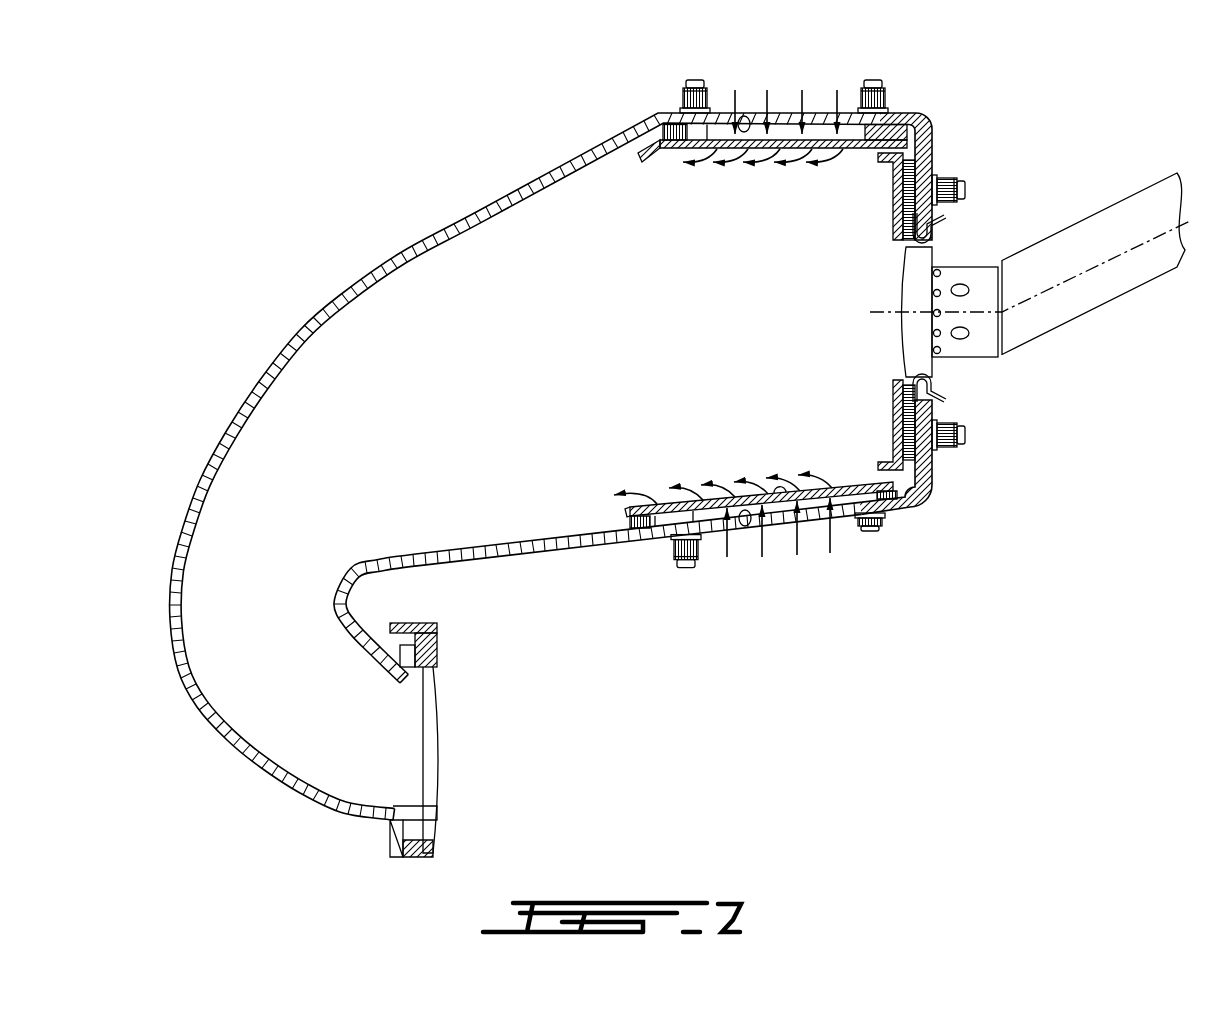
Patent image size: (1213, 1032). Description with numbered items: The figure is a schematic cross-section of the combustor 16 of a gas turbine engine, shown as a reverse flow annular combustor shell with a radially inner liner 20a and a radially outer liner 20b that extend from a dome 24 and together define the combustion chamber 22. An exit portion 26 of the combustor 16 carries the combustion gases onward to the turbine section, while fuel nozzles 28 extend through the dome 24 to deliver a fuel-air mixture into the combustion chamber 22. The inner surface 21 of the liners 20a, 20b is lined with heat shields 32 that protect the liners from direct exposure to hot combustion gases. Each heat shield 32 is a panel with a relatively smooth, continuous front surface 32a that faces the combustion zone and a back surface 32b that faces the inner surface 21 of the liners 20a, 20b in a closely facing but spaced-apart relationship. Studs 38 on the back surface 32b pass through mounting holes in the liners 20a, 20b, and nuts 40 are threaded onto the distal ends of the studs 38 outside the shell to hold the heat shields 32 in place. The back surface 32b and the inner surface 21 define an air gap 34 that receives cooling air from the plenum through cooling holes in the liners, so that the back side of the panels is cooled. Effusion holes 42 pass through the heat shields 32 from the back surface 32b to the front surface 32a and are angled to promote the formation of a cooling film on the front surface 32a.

The combustor 16 is at (253, 230).
The radially inner liner 20a is at (545, 551).
The radially outer liner 20b is at (485, 202).
The inner surface 21 is at (748, 116).
The combustion chamber 22 is at (707, 327).
The dome 24 is at (936, 475).
The exit portion 26 is at (383, 744).
The fuel nozzles 28 is at (1060, 210).
The heat shields 32 is at (793, 149).
The front surface 32a is at (718, 149).
The back surface 32b is at (780, 487).
The air gap 34 is at (816, 132).
The studs 38 is at (878, 130).
The nuts 40 is at (684, 90).
The effusion holes 42 is at (753, 149).